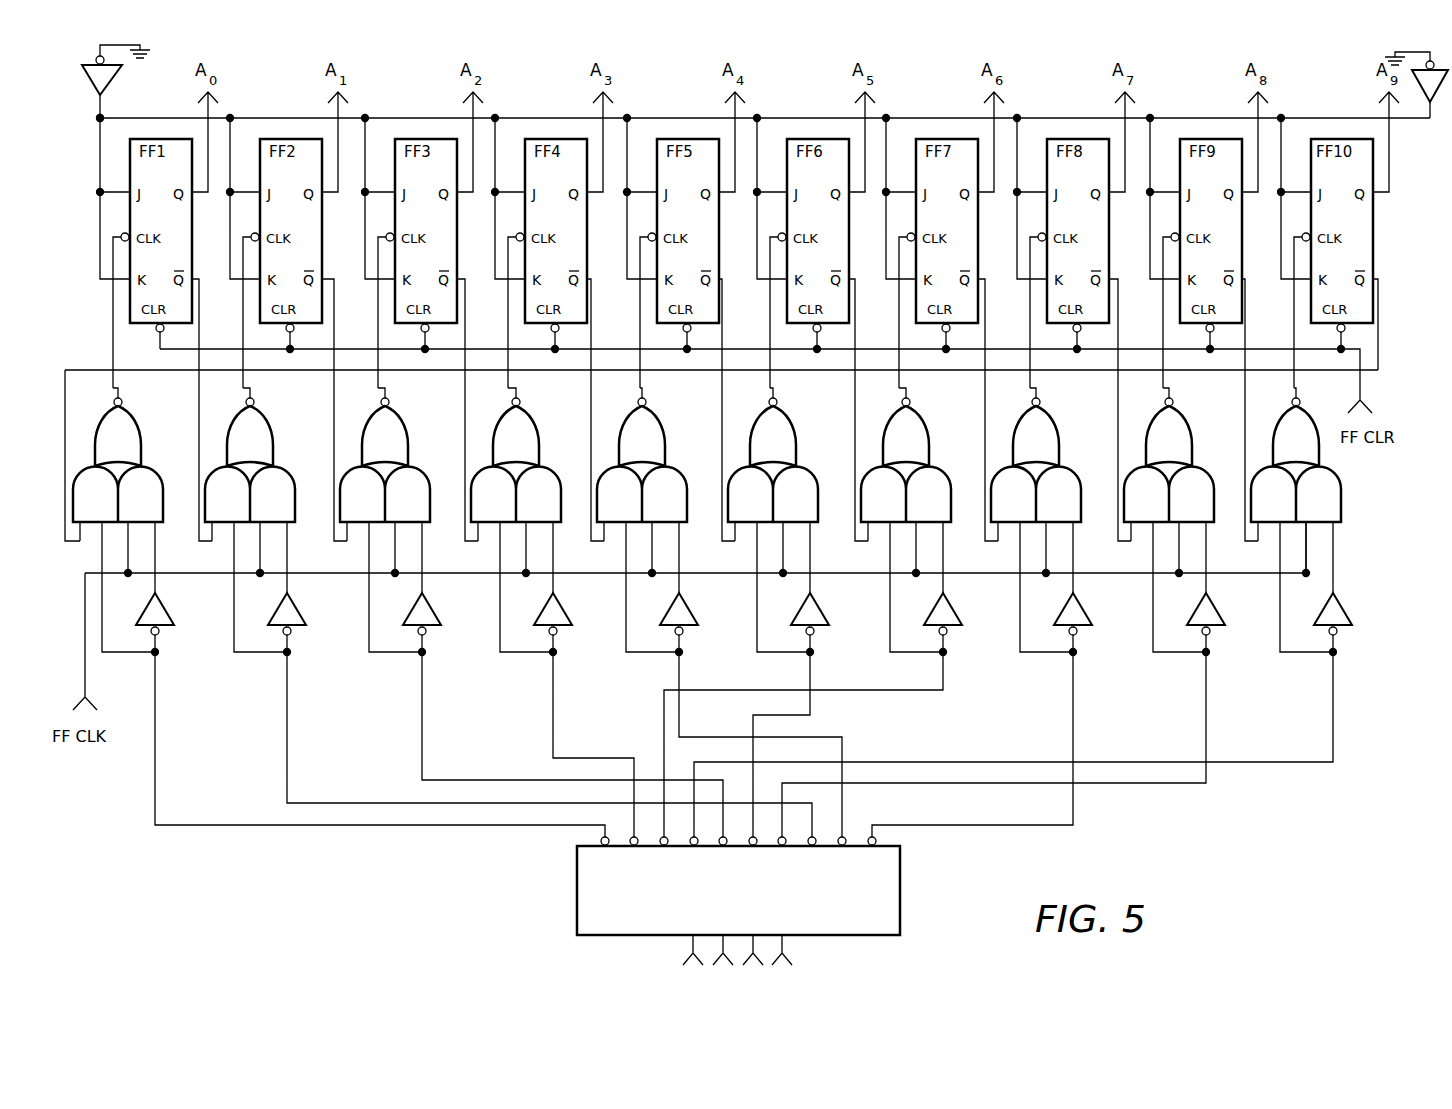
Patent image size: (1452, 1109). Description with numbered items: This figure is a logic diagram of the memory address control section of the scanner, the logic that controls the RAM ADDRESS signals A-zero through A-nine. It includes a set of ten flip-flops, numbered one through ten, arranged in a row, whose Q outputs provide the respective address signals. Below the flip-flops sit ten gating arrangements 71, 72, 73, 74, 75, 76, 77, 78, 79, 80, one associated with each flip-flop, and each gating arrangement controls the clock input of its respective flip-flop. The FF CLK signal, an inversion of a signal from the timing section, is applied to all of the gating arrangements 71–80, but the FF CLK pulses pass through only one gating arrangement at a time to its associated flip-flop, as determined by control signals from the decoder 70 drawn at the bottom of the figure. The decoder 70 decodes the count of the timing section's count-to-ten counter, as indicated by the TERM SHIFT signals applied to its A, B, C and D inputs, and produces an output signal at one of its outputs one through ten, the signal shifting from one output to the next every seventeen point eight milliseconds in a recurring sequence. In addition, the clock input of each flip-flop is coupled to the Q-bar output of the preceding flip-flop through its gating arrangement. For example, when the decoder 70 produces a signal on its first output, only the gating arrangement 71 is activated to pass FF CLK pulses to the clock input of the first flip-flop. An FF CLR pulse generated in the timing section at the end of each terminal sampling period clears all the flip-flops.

The decoder 70 is at (900, 902).
The gating arrangement 71 is at (151, 427).
The gating arrangement 72 is at (283, 427).
The gating arrangement 73 is at (418, 427).
The gating arrangement 74 is at (549, 427).
The gating arrangement 75 is at (675, 427).
The gating arrangement 76 is at (806, 427).
The gating arrangement 77 is at (939, 427).
The gating arrangement 78 is at (1069, 427).
The gating arrangement 79 is at (1202, 427).
The gating arrangement 80 is at (1275, 417).